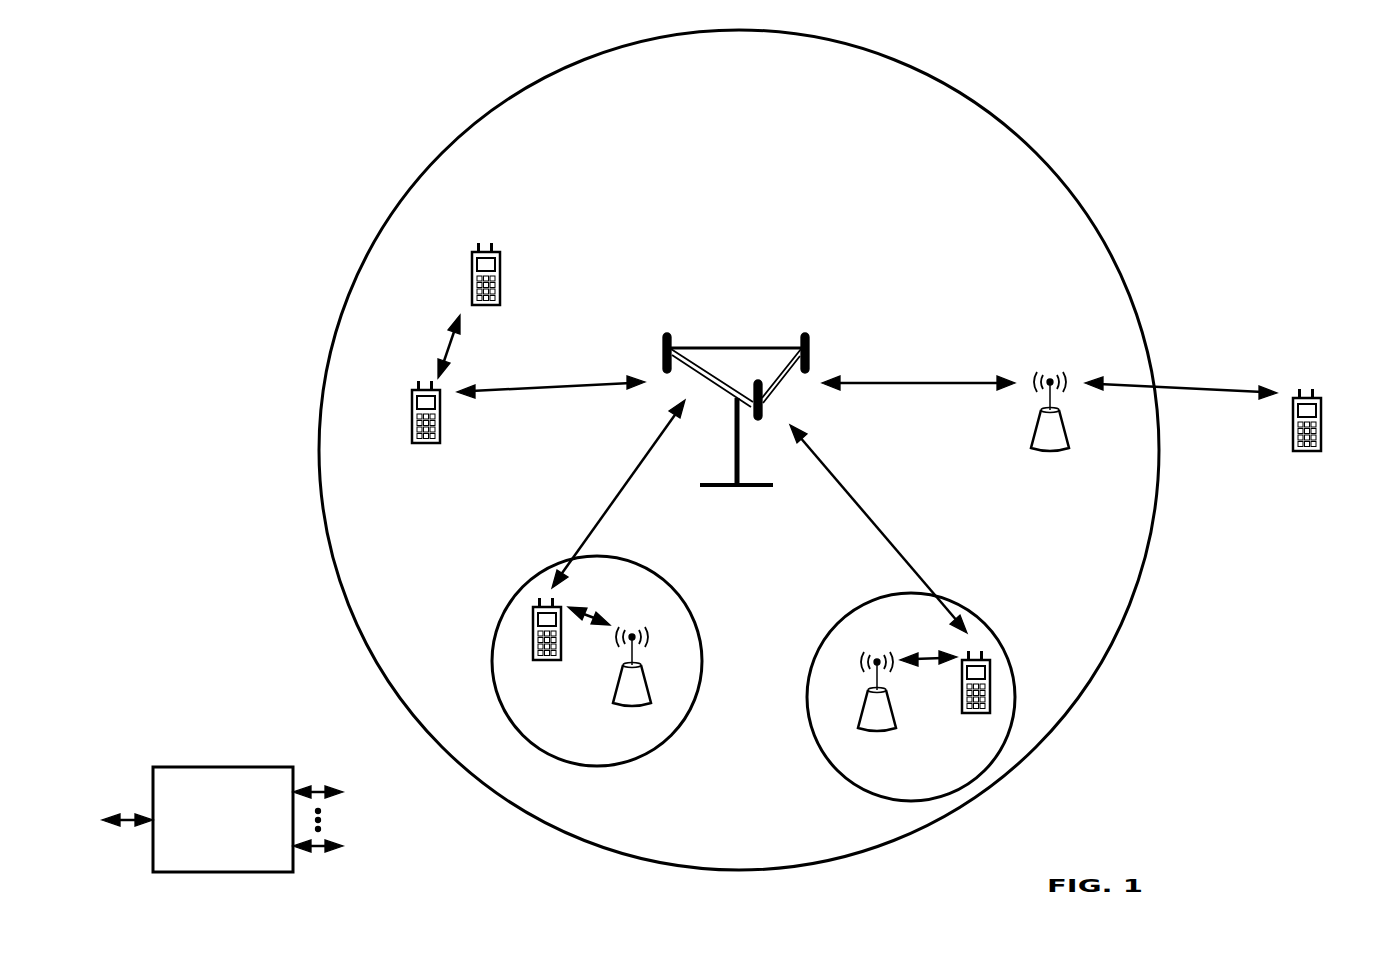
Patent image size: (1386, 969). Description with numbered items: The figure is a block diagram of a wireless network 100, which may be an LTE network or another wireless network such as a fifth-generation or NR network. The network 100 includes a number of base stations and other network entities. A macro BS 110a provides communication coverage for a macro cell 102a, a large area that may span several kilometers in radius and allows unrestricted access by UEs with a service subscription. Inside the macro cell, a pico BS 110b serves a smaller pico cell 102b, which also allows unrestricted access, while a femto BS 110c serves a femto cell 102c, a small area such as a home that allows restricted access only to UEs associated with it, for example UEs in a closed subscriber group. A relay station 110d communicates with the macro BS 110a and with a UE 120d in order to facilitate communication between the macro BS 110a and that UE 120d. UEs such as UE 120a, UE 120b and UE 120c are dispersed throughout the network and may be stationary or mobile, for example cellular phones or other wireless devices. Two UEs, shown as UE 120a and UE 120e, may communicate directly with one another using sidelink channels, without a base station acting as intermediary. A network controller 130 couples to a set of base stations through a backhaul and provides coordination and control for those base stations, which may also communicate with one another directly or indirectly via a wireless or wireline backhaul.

The wireless network 100 is at (1242, 91).
The macro cell 102a is at (1014, 136).
The pico cell 102b is at (672, 589).
The femto cell 102c is at (836, 624).
The macro BS 110a is at (735, 347).
The pico BS 110b is at (649, 690).
The femto BS 110c is at (858, 714).
The relay station 110d is at (1050, 376).
The UE 120a is at (412, 402).
The UE 120b is at (533, 655).
The UE 120c is at (962, 708).
The UE 120d is at (1322, 412).
The UE 120e is at (470, 262).
The network controller 130 is at (218, 767).